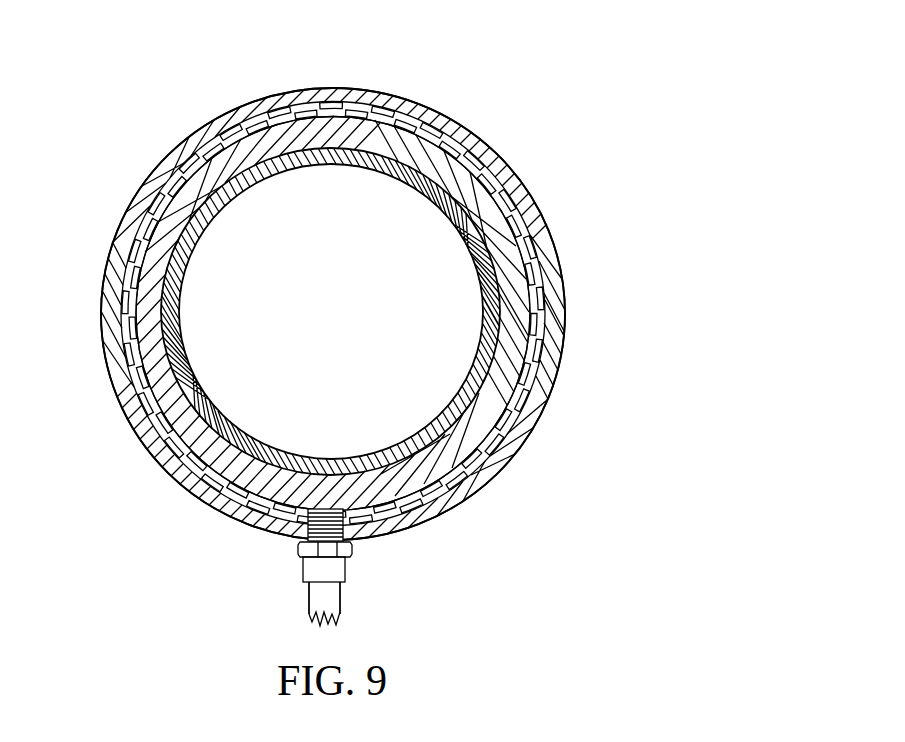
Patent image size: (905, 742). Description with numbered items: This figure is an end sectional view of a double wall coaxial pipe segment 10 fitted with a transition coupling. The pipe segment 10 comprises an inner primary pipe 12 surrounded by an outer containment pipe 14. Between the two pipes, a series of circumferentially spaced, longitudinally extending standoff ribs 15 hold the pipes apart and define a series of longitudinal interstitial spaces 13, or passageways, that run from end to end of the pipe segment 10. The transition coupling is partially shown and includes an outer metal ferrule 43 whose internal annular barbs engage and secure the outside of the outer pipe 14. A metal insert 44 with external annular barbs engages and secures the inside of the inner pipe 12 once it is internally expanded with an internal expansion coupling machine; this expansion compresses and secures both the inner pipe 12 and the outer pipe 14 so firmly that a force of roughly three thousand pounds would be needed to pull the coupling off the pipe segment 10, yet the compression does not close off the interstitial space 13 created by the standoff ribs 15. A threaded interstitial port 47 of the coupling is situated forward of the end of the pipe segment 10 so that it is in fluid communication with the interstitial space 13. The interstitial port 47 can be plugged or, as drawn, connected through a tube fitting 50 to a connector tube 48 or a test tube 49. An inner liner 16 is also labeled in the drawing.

The coaxial pipe segment 10 is at (357, 121).
The inner primary pipe 12 is at (213, 172).
The interstitial space 13 is at (135, 412).
The outer containment pipe 14 is at (147, 218).
The standoff ribs 15 is at (130, 318).
The inner liner 16 is at (184, 352).
The outer metal ferrule 43 is at (545, 246).
The metal insert 44 is at (488, 336).
The threaded interstitial port 47 is at (360, 526).
The connector tube 48 is at (325, 598).
The test tube 49 is at (324, 598).
The tube fitting 50 is at (323, 565).